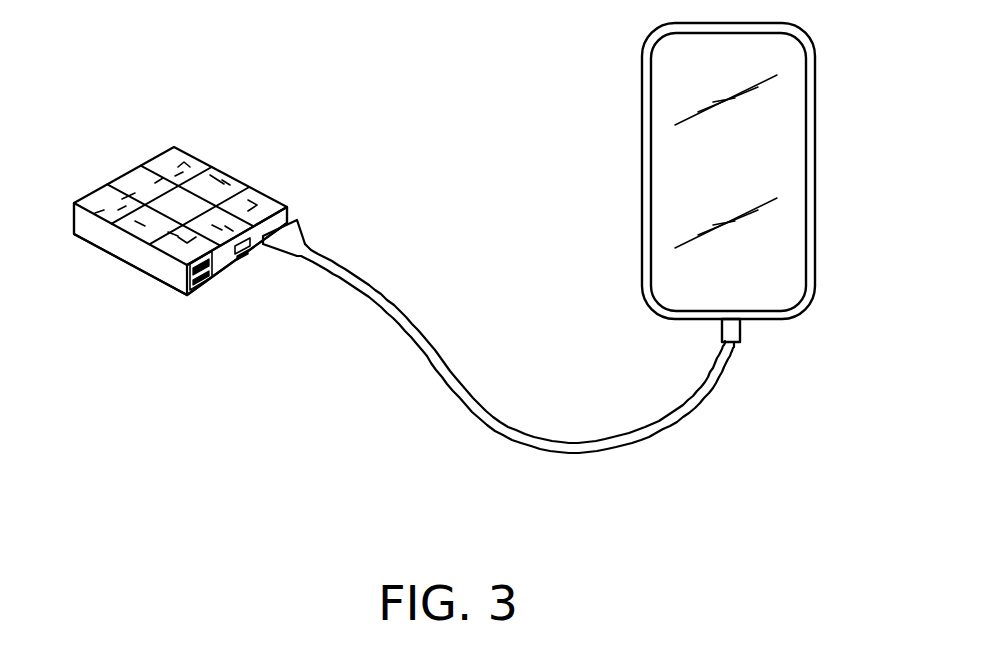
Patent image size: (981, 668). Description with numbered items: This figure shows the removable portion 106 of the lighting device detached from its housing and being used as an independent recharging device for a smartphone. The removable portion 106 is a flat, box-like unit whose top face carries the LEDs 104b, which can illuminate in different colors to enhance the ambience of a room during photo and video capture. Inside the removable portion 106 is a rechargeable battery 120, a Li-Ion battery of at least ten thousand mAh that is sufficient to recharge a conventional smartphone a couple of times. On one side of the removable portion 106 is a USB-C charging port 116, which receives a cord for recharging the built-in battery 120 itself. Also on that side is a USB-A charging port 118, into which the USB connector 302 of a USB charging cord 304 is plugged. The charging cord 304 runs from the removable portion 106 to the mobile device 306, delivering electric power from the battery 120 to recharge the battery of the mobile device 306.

The removable portion 106 is at (173, 140).
The LEDs 104b is at (188, 150).
The USB port 118 is at (286, 205).
The rechargeable battery 120 is at (115, 205).
The charging port 116 is at (252, 257).
The USB connector 302 is at (300, 236).
The USB charging cord 304 is at (428, 332).
The mobile device 306 is at (763, 155).